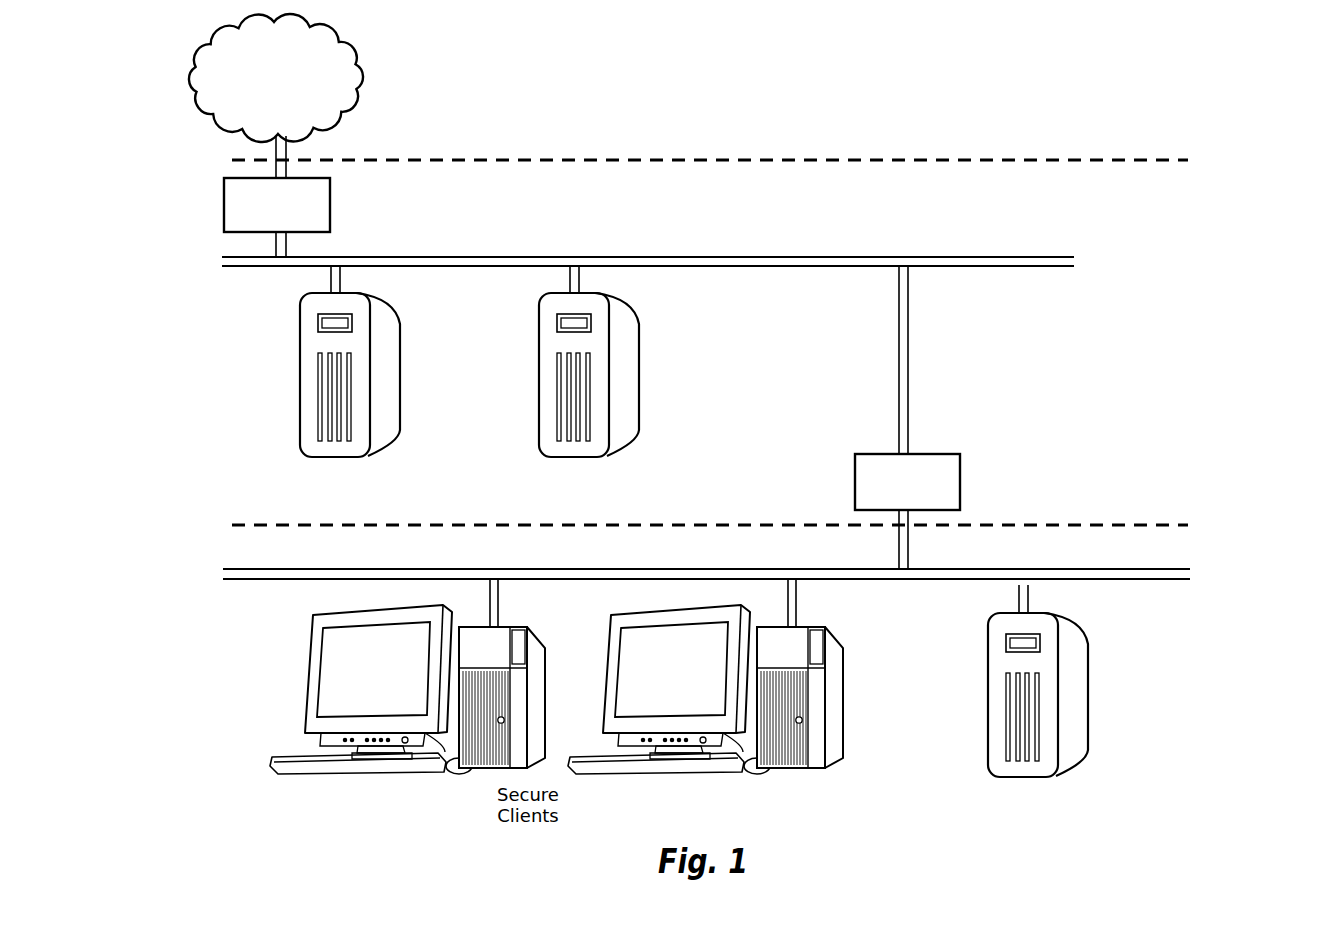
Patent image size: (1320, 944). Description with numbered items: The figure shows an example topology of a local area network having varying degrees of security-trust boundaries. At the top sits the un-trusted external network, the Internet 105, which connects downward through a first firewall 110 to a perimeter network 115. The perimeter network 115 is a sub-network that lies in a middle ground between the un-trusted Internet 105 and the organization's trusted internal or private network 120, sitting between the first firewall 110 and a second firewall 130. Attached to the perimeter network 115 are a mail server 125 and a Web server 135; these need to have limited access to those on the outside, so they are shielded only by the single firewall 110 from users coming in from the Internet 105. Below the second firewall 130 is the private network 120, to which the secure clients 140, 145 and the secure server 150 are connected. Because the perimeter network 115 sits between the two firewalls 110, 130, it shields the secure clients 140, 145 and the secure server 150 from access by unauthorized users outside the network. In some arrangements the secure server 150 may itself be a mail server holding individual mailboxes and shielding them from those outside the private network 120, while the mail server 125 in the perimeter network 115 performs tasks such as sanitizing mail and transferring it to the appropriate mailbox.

The Internet 105 is at (365, 92).
The firewall 110 is at (332, 206).
The perimeter network 115 is at (1117, 318).
The private network 120 is at (1172, 684).
The mail server 125 is at (400, 365).
The firewall 130 is at (962, 482).
The Web server 135 is at (640, 365).
The secure clients 140 is at (305, 690).
The secure clients 145 is at (843, 692).
The secure server 150 is at (1087, 658).